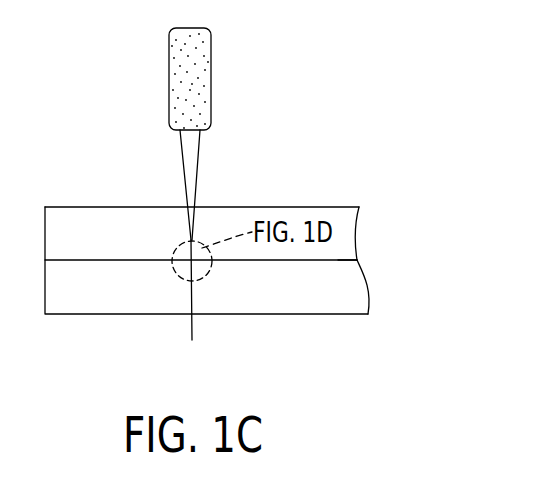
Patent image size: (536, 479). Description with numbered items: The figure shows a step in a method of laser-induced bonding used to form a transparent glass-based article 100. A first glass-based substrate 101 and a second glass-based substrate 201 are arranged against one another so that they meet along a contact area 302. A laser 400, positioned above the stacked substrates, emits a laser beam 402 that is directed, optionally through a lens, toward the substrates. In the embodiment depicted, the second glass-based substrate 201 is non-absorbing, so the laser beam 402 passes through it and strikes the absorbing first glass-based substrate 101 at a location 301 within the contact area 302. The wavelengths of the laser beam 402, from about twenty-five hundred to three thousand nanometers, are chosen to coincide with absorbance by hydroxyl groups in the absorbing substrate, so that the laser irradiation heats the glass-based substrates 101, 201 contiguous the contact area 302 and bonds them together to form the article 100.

The transparent glass-based article 100 is at (127, 143).
The first glass-based substrate 101 is at (294, 300).
The second glass-based substrate 201 is at (107, 220).
The location 301 is at (192, 263).
The contact area 302 is at (338, 260).
The laser 400 is at (212, 90).
The laser beam 402 is at (190, 162).